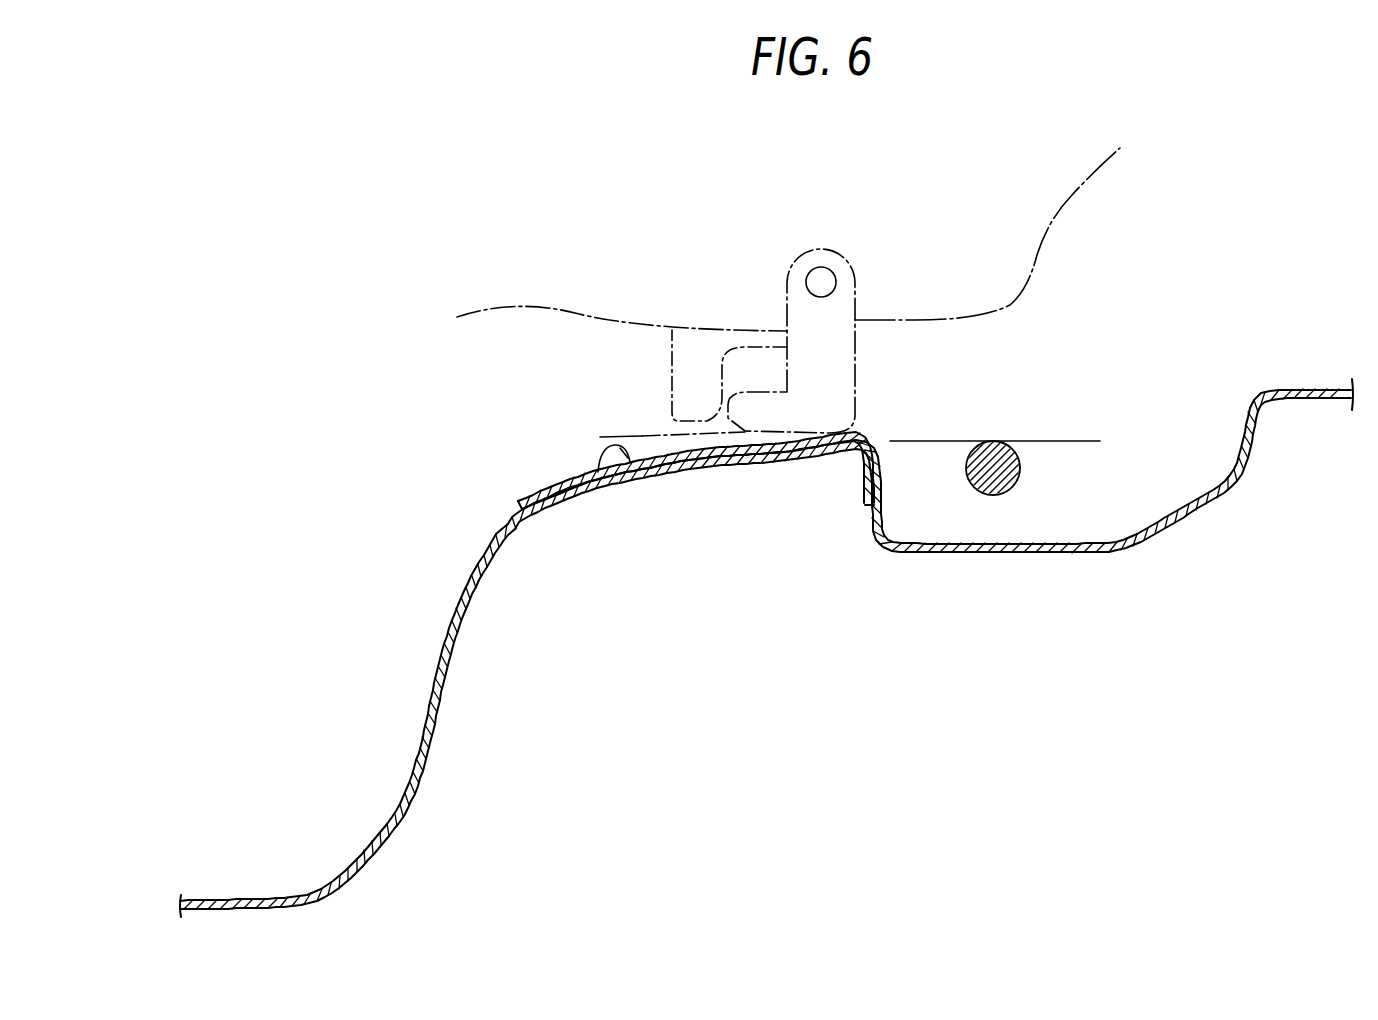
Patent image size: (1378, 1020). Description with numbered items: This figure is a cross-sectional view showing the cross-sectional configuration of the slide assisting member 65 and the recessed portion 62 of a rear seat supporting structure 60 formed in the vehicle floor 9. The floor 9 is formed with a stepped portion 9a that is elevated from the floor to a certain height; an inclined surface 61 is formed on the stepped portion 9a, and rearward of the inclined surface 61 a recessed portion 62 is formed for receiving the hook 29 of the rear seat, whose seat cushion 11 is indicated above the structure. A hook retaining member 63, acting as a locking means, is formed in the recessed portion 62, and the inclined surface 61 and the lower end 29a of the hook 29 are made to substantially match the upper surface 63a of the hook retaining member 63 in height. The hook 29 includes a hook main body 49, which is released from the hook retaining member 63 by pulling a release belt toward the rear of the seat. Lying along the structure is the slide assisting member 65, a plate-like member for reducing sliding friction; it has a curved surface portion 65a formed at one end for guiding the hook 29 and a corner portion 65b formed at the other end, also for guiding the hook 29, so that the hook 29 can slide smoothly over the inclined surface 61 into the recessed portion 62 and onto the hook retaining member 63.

The floor 9 is at (268, 848).
The stepped portion 9a is at (1318, 386).
The seat cushion 11 is at (540, 332).
The hook 29 is at (878, 347).
The lower end of the hook 29a is at (668, 440).
The hook main body 49 is at (858, 376).
The rear seat supporting structure 60 is at (356, 396).
The inclined surface 61 is at (640, 447).
The recessed portion 62 is at (1176, 489).
The hook retaining member 63 is at (993, 496).
The upper surface of the hook retaining member 63a is at (1063, 440).
The slide assisting member 65 is at (599, 478).
The curved surface portion 65a is at (553, 477).
The corner portion 65b is at (878, 443).